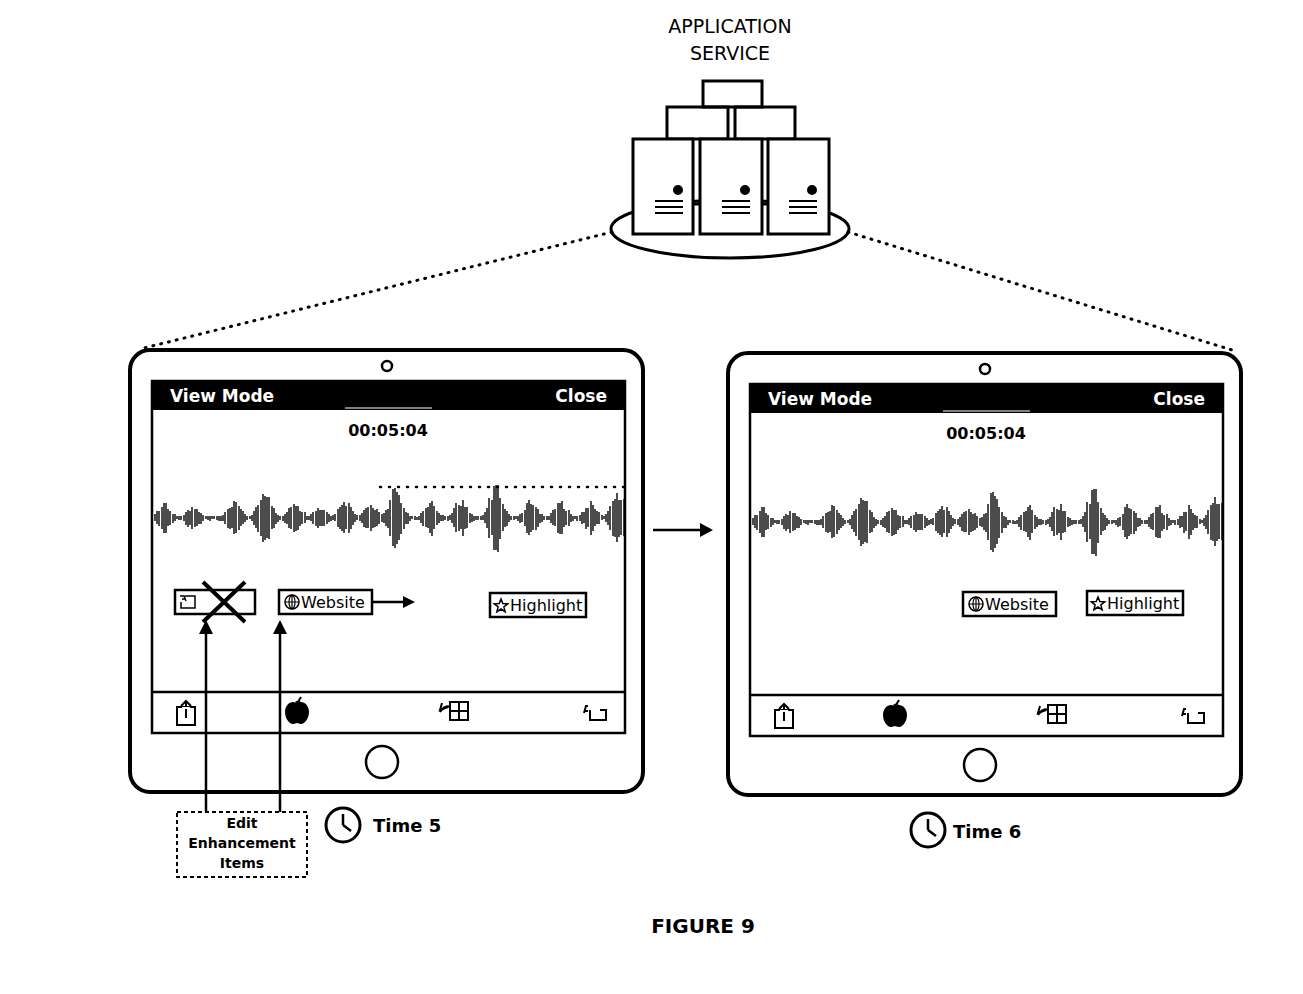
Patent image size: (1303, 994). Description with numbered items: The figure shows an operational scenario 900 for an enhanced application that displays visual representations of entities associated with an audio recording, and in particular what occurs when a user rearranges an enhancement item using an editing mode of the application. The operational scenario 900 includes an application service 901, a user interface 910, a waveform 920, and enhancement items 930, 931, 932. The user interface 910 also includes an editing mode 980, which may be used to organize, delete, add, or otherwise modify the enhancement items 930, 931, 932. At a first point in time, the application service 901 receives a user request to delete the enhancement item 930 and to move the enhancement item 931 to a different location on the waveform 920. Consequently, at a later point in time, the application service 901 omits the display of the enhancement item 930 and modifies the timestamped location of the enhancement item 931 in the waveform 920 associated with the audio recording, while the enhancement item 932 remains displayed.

The operational scenario 900 is at (142, 108).
The application service 901 is at (703, 95).
The user interface 910 is at (402, 350).
The waveform 920 is at (175, 497).
The enhancement item 930 is at (183, 590).
The enhancement item 931 is at (305, 590).
The enhancement item 932 is at (532, 593).
The editing mode 980 is at (418, 382).